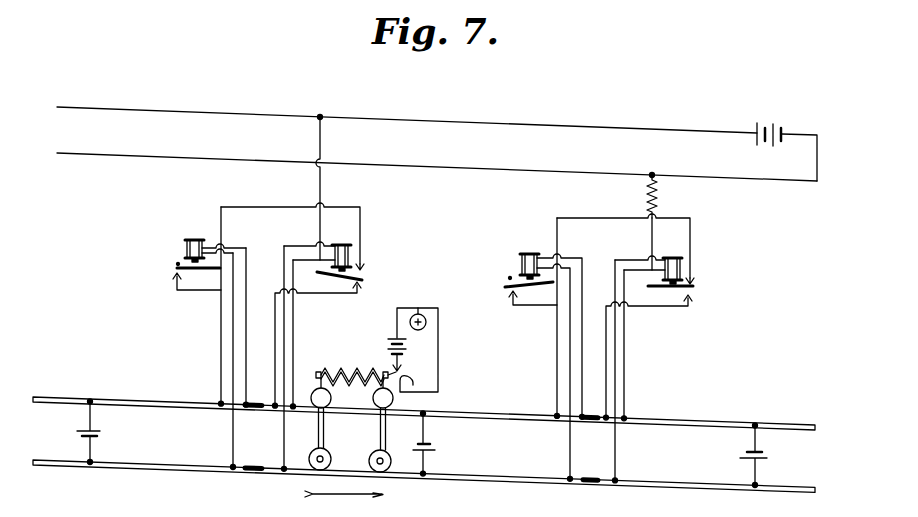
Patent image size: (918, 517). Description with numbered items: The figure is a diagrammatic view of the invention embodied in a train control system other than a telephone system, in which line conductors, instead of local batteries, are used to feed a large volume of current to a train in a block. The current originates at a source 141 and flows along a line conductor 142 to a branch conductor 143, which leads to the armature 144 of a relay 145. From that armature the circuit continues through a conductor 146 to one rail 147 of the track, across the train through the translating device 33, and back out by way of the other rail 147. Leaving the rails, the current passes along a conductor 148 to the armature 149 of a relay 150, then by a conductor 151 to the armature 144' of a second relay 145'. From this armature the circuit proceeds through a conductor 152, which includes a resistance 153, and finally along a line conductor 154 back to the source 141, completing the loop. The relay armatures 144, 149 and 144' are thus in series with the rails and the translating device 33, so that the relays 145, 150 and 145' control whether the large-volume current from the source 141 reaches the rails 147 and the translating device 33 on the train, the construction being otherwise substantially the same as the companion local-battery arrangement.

The translating device 33 is at (352, 365).
The source 141 is at (770, 121).
The line conductor 142 is at (600, 127).
The branch conductor 143 is at (322, 147).
The armature of relay 144 is at (331, 280).
The armature of relay 144' is at (657, 371).
The relay 145 is at (344, 254).
The relay 145' is at (678, 270).
The conductor 146 is at (305, 294).
The rail 147 is at (373, 390).
The conductor 148 is at (556, 376).
The armature of relay 149 is at (535, 292).
The relay 150 is at (531, 252).
The conductor 151 is at (690, 245).
The conductor 152 is at (655, 234).
The resistance 153 is at (645, 197).
The line conductor 154 is at (760, 182).